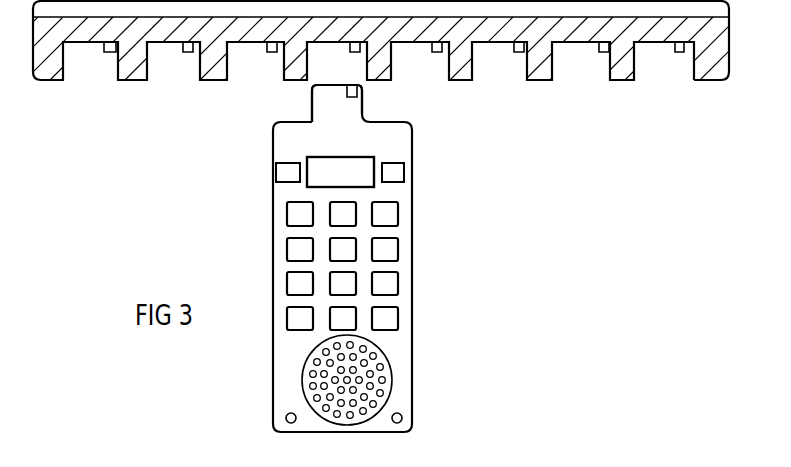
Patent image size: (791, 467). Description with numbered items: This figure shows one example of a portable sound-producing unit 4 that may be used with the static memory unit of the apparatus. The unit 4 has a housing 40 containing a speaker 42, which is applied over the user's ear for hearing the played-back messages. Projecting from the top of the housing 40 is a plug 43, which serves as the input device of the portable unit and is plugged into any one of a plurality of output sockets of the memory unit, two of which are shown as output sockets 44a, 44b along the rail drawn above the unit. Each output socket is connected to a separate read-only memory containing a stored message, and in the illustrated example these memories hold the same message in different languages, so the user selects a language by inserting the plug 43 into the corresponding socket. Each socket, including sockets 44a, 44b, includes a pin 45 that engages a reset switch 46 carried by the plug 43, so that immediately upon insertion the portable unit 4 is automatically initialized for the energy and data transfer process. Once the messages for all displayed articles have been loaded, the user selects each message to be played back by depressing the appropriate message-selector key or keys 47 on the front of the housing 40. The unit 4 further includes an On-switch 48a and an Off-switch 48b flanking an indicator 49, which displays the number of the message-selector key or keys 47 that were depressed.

The portable sound-producing unit 4 is at (433, 218).
The housing 40 is at (273, 205).
The speaker 42 is at (312, 360).
The plug 43 is at (320, 96).
The output socket 44a is at (80, 66).
The output socket 44b is at (680, 62).
The pin 45 is at (108, 53).
The reset switch 46 is at (357, 86).
The message-selector keys 47 is at (287, 250).
The On-switch 48a is at (256, 160).
The Off-switch 48b is at (397, 163).
The indicator 49 is at (354, 164).